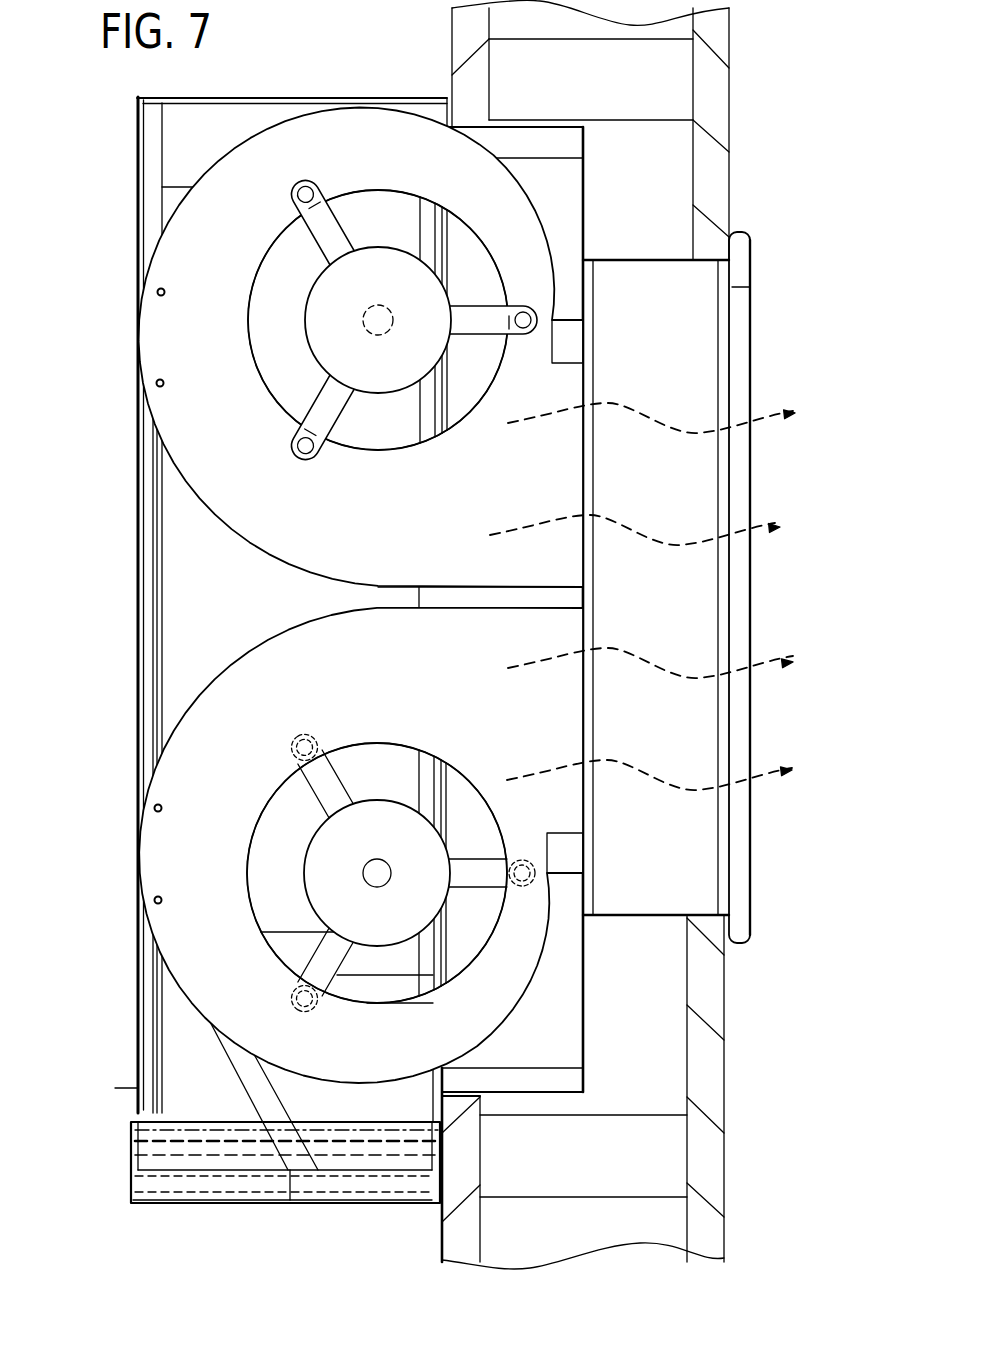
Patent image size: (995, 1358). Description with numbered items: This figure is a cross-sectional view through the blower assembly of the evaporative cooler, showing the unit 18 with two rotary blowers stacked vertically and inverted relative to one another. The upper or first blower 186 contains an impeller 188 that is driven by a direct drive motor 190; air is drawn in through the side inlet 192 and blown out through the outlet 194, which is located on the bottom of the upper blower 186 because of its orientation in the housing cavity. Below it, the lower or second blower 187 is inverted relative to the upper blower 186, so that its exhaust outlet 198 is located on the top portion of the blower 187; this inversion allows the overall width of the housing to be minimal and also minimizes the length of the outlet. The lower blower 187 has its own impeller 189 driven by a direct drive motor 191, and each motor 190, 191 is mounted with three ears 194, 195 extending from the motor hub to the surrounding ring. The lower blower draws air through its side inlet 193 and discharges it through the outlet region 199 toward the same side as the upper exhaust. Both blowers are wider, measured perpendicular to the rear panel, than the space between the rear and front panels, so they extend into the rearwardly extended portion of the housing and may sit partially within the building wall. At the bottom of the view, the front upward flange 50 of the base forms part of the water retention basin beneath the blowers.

The air handling unit 18 is at (82, 613).
The front upwards extending flange 50 is at (132, 1145).
The upper blower 186 is at (105, 348).
The lower blower 187 is at (100, 858).
The impeller 188 is at (373, 331).
The second blower wheel 189 is at (342, 873).
The motor 190 is at (321, 320).
The direct drive motor 191 is at (326, 873).
The side inlet 192 is at (349, 320).
The second blower inlet ring 193 is at (371, 865).
The outlet / mounting ears 194 is at (411, 334).
The ears 195 is at (410, 892).
The exhaust outlet 198 is at (697, 462).
The second outlet airflow 199 is at (692, 718).